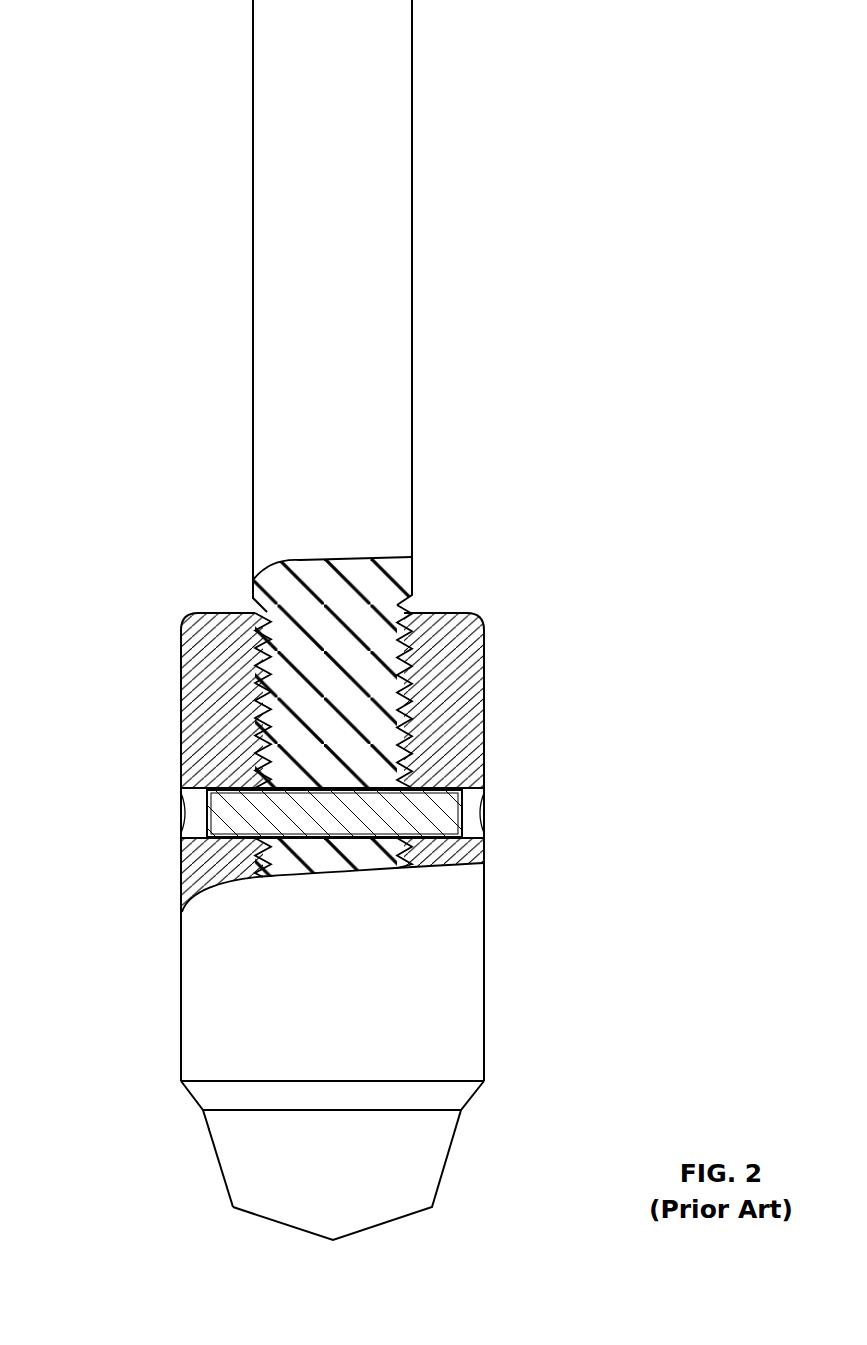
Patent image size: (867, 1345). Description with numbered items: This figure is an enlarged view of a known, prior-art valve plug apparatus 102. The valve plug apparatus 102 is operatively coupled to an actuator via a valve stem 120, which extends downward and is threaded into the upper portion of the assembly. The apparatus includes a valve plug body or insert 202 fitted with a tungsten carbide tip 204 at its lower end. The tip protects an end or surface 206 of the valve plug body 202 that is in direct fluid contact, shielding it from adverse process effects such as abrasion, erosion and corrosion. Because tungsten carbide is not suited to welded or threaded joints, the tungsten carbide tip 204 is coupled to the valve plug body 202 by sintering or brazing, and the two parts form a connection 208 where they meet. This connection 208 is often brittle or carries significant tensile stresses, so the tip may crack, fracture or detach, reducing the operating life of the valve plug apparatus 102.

The valve plug apparatus 102 is at (116, 152).
The valve stem 120 is at (253, 347).
The valve plug body 202 is at (484, 942).
The tungsten carbide tip 204 is at (452, 1163).
The end or surface of the valve plug body 206 is at (232, 1163).
The connection 208 is at (498, 1090).